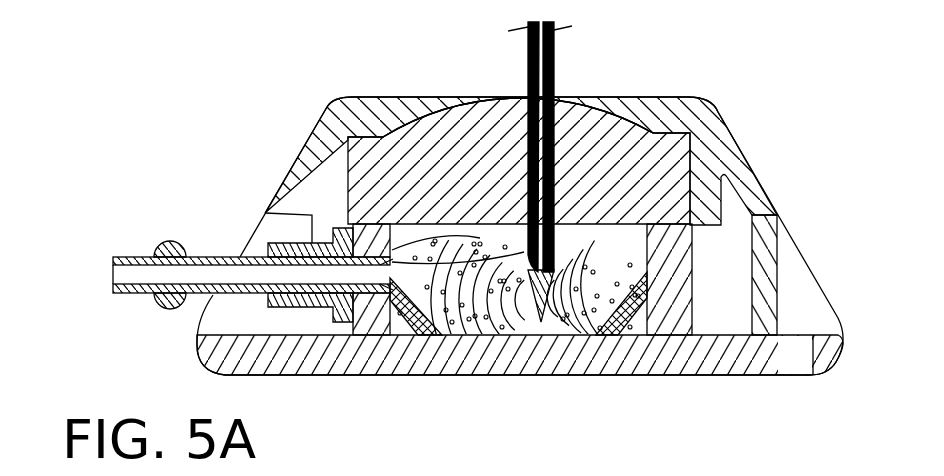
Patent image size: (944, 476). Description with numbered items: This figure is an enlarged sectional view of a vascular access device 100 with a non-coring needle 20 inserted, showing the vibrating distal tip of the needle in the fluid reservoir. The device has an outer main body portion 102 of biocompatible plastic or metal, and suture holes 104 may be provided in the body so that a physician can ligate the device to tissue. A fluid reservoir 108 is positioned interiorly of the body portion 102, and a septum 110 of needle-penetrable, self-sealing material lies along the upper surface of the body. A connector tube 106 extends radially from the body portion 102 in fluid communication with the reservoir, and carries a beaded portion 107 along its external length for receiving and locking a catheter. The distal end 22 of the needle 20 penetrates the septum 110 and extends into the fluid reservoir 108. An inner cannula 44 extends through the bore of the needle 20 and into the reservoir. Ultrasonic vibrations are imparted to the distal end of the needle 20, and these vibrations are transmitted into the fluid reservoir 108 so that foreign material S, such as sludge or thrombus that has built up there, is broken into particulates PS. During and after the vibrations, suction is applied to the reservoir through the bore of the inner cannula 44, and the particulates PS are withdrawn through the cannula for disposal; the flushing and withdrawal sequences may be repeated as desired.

The vascular access device 100 is at (293, 111).
The outer main body portion 102 is at (721, 113).
The suture holes 104 is at (795, 352).
The connector tube 106 is at (134, 257).
The beaded portion 107 is at (168, 241).
The fluid reservoir 108 is at (500, 250).
The septum 110 is at (608, 97).
The non-coring needle 20 is at (552, 55).
The distal end 22 is at (541, 327).
The inner cannula 44 is at (527, 165).
The particulates PS is at (498, 335).
The foreign material S is at (395, 330).